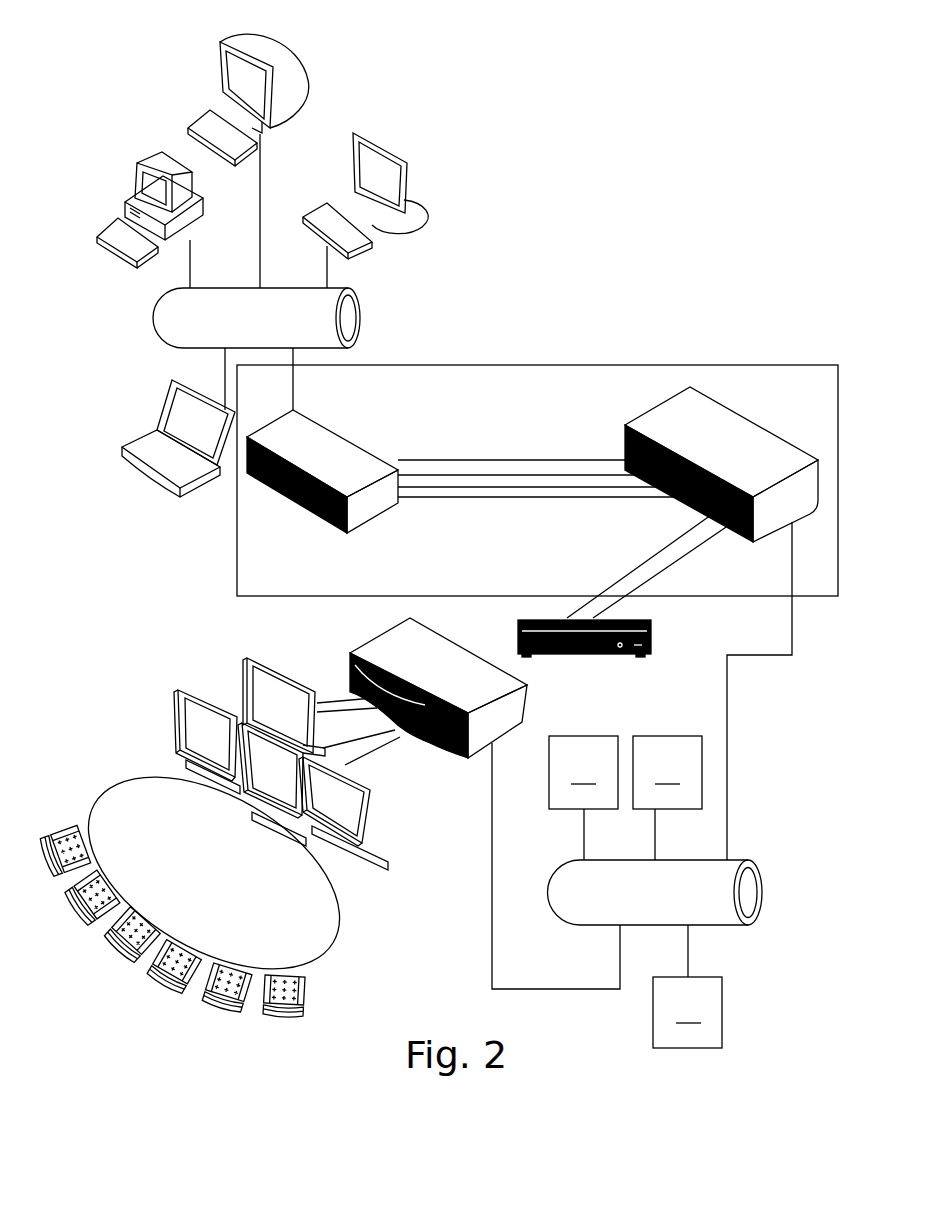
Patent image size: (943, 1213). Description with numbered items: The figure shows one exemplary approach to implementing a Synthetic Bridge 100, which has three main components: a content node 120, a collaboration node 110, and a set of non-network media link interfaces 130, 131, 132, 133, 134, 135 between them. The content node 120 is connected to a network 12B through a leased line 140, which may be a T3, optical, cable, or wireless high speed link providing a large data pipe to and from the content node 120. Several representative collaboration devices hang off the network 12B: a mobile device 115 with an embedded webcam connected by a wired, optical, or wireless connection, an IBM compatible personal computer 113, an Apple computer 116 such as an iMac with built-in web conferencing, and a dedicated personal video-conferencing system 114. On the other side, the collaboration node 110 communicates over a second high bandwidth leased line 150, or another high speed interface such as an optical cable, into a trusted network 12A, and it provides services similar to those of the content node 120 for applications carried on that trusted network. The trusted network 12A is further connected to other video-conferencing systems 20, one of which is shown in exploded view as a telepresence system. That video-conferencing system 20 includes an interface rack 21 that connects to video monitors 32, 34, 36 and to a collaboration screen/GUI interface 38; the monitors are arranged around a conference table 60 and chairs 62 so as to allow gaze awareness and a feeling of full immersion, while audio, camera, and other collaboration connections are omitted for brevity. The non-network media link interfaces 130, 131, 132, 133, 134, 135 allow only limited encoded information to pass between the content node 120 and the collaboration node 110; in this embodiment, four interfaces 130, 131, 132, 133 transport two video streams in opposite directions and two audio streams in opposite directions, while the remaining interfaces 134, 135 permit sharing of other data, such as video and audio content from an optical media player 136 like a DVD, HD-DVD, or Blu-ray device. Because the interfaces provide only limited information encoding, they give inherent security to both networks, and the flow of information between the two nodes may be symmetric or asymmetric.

The Synthetic Bridge 100 is at (783, 402).
The collaboration node 110 is at (633, 423).
The IBM compatible personal computer 113 is at (137, 162).
The dedicated personal video-conferencing system 114 is at (382, 138).
The mobile device 115 is at (131, 470).
The Apple computer 116 is at (277, 50).
The trusted network 12A is at (758, 866).
The network 12B is at (361, 316).
The content node 120 is at (343, 433).
The non-network media link interface 130 is at (433, 459).
The non-network media link interface 131 is at (463, 474).
The non-network media link interface 132 is at (492, 486).
The non-network media link interface 133 is at (523, 496).
The non-network media link interface 134 is at (622, 578).
The non-network media link interface 135 is at (712, 542).
The optical media player 136 is at (609, 656).
The leased line 140 is at (294, 385).
The second high bandwidth leased line 150 is at (727, 720).
The video-conferencing system 20 is at (398, 873).
The interface rack 21 is at (427, 744).
The video monitor 32 is at (208, 689).
The video monitor 34 is at (327, 752).
The video monitor 36 is at (372, 812).
The collaboration screen/GUI interface 38 is at (279, 660).
The conference table 60 is at (222, 889).
The chairs 62 is at (320, 997).